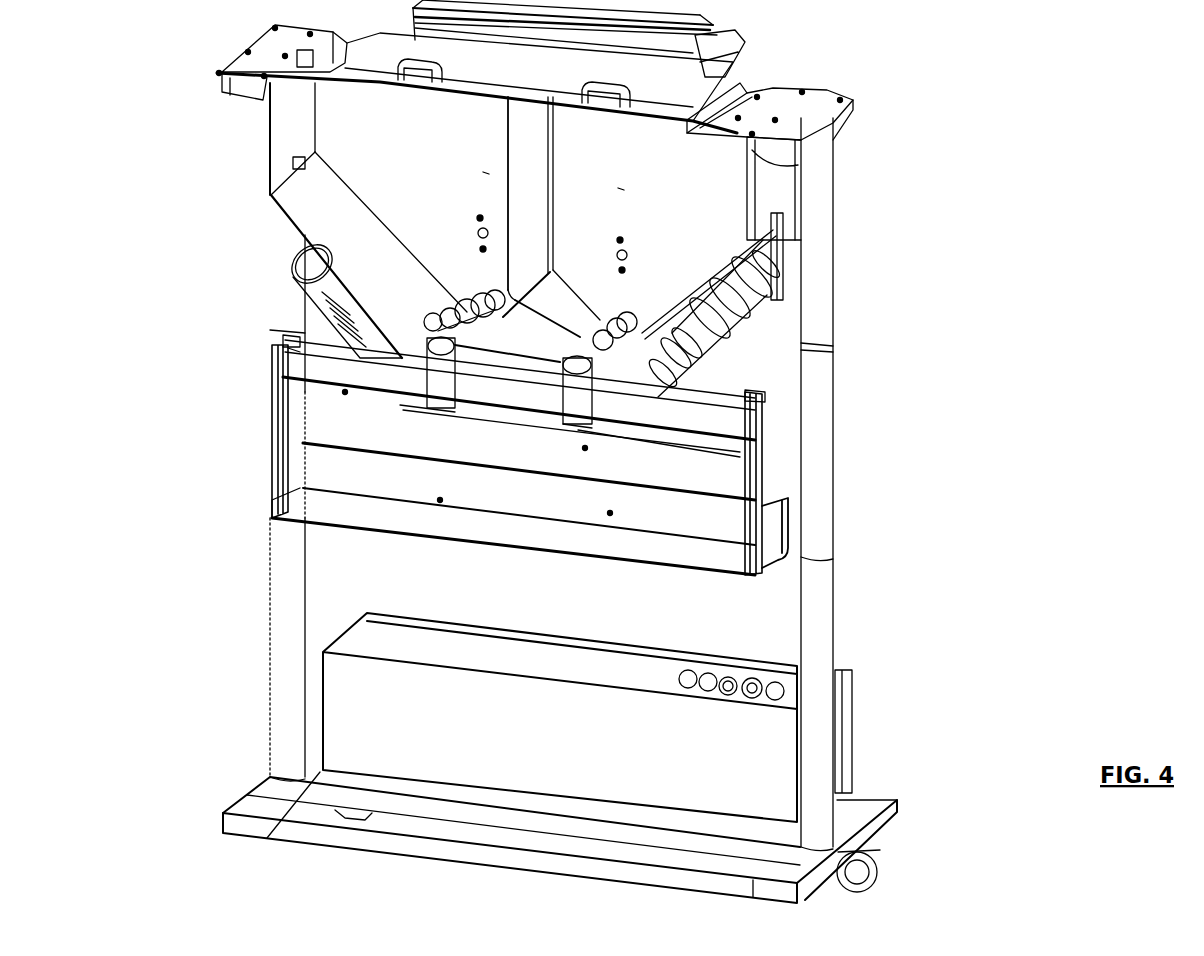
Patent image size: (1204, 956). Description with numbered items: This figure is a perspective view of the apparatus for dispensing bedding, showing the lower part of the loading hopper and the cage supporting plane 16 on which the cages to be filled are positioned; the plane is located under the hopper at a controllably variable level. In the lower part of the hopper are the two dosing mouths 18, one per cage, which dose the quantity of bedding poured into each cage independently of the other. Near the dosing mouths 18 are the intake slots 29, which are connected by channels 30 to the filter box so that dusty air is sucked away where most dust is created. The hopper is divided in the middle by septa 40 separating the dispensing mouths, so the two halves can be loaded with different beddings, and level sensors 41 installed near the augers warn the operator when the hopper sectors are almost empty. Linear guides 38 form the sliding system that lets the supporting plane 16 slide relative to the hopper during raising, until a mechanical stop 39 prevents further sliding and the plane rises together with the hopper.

The supporting plane 16 is at (403, 407).
The dosing mouths 18 is at (578, 428).
The intake slots 29 is at (270, 497).
The channels 30 is at (303, 312).
The linear guides 38 is at (272, 428).
The mechanical stop 39 is at (290, 342).
The septa 40 is at (527, 225).
The level sensors 41 is at (430, 322).